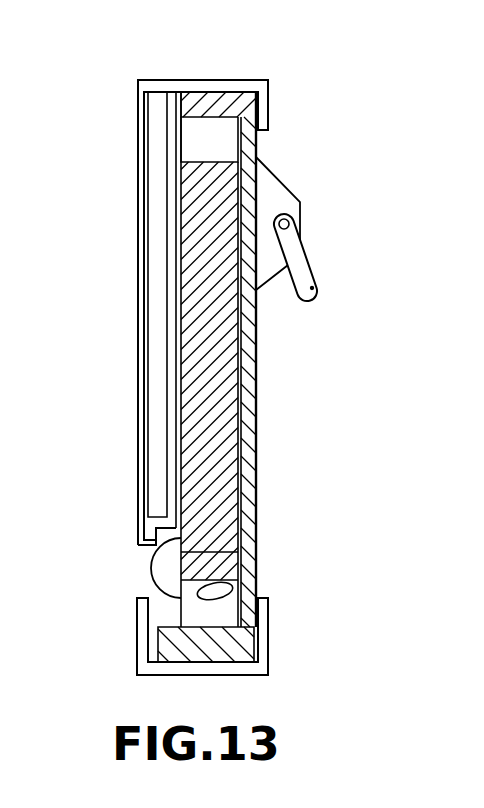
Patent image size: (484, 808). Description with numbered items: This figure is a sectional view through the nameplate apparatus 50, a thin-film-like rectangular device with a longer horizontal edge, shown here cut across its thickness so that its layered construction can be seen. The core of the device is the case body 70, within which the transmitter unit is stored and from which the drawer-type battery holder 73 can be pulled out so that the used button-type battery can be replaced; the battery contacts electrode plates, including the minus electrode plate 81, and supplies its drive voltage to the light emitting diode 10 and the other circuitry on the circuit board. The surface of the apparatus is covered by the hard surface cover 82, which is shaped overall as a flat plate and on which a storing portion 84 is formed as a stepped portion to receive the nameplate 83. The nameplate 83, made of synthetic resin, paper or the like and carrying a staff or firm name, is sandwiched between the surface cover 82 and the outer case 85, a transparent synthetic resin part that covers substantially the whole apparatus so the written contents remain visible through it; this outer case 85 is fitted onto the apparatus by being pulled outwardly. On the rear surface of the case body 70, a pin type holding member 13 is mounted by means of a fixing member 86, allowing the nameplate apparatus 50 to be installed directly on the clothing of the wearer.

The light emitting diode 10 is at (150, 570).
The pin type holding member 13 is at (320, 285).
The nameplate apparatus 50 is at (70, 419).
The case body 70 is at (227, 97).
The battery holder 73 is at (230, 177).
The minus electrode plate 81 is at (232, 584).
The surface cover 82 is at (174, 357).
The nameplate 83 is at (157, 265).
The storing portion 84 is at (163, 455).
The outer case 85 is at (158, 82).
The fixing member 86 is at (280, 200).